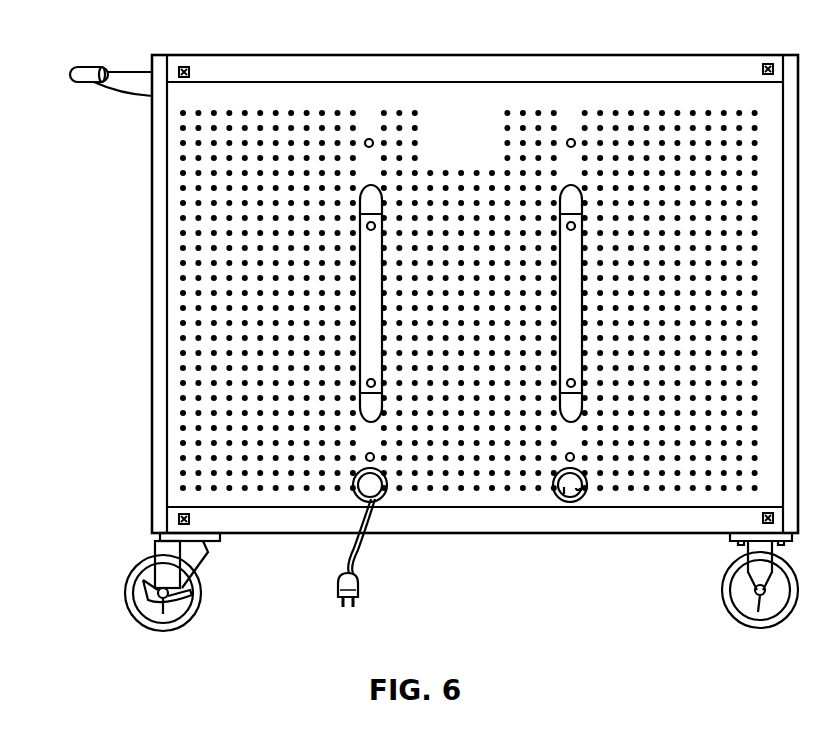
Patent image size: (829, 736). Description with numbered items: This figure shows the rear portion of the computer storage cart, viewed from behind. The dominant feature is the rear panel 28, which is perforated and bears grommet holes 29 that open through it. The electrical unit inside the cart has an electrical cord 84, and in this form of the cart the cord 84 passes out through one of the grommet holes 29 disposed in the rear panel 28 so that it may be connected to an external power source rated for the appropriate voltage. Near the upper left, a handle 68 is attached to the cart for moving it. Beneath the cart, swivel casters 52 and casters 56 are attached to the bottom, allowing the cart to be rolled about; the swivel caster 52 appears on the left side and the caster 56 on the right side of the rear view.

The rear panel 28 is at (722, 95).
The grommet holes 29 is at (379, 498).
The swivel casters 52 is at (162, 620).
The casters 56 is at (758, 612).
The handle 68 is at (78, 67).
The electrical cord 84 is at (338, 590).